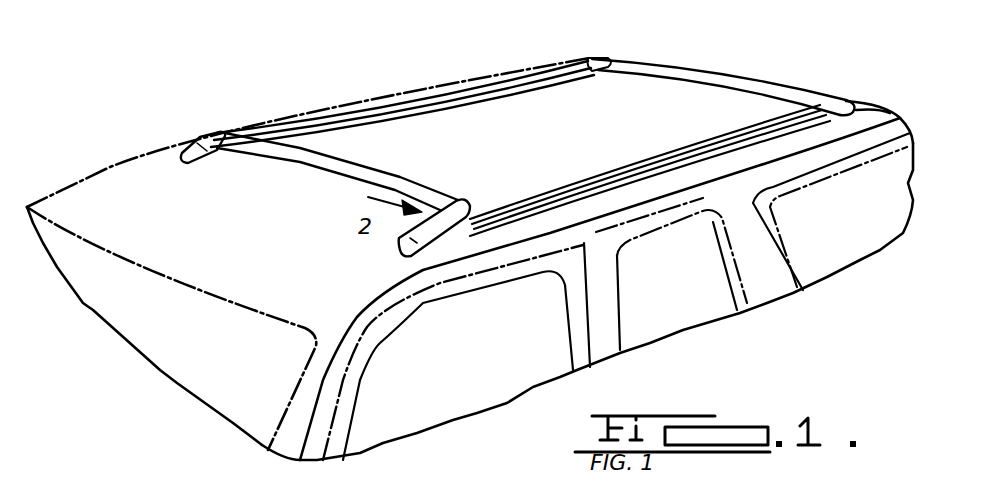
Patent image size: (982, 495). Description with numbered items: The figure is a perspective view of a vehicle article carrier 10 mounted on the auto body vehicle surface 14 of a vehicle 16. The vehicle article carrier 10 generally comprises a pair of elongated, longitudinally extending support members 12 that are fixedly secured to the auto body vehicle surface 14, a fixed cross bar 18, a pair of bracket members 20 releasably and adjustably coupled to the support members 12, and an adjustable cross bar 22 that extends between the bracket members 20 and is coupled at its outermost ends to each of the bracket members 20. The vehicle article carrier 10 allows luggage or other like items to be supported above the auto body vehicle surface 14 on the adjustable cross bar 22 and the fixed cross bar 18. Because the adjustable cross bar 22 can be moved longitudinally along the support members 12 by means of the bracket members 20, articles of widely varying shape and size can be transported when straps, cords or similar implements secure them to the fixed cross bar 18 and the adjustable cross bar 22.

The vehicle article carrier 10 is at (493, 135).
The support members 12 is at (364, 116).
The auto body vehicle surface 14 is at (110, 190).
The vehicle 16 is at (872, 105).
The fixed cross bar 18 is at (736, 76).
The bracket members 20 is at (198, 140).
The adjustable cross bar 22 is at (310, 162).